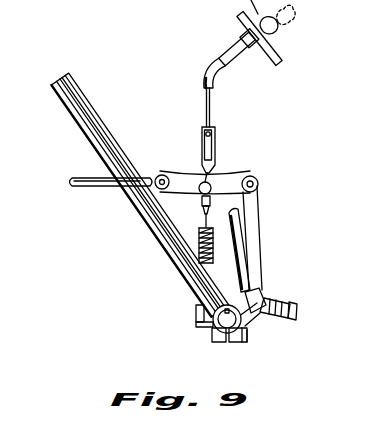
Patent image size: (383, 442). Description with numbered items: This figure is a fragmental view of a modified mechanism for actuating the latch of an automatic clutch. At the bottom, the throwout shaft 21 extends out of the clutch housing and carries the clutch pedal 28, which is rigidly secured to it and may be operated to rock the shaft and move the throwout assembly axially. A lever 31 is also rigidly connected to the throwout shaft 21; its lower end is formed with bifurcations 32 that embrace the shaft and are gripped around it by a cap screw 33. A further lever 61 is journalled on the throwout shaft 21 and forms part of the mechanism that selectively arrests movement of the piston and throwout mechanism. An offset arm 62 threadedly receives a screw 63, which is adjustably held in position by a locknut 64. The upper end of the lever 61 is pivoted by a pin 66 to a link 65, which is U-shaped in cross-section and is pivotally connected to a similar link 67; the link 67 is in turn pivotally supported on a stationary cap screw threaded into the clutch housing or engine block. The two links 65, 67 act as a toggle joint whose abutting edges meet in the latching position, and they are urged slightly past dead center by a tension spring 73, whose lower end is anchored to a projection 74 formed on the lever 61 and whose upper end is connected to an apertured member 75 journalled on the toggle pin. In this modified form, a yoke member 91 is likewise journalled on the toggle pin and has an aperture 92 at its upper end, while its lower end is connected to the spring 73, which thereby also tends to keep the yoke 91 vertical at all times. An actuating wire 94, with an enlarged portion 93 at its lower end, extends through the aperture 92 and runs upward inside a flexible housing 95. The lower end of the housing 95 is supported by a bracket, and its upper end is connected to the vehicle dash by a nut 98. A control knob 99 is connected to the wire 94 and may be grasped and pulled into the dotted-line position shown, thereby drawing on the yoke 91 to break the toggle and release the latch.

The throwout shaft 21 is at (218, 325).
The clutch pedal 28 is at (146, 226).
The lever 31 is at (232, 265).
The bifurcations 32 is at (238, 342).
The cap screw 33 is at (248, 333).
The lever 61 is at (247, 232).
The offset arm 62 is at (262, 293).
The screw 63 is at (295, 310).
The locknut 64 is at (268, 298).
The link 65 is at (232, 182).
The pin 66 is at (258, 181).
The link 67 is at (183, 177).
The tension spring 73 is at (198, 255).
The projection 74 is at (195, 323).
The apertured member 75 is at (202, 210).
The yoke member 91 is at (216, 150).
The aperture 92 is at (202, 130).
The enlarged portion 93 is at (215, 132).
The actuating wire 94 is at (211, 110).
The flexible housing 95 is at (202, 82).
The nut 98 is at (259, 50).
The control knob 99 is at (280, 25).